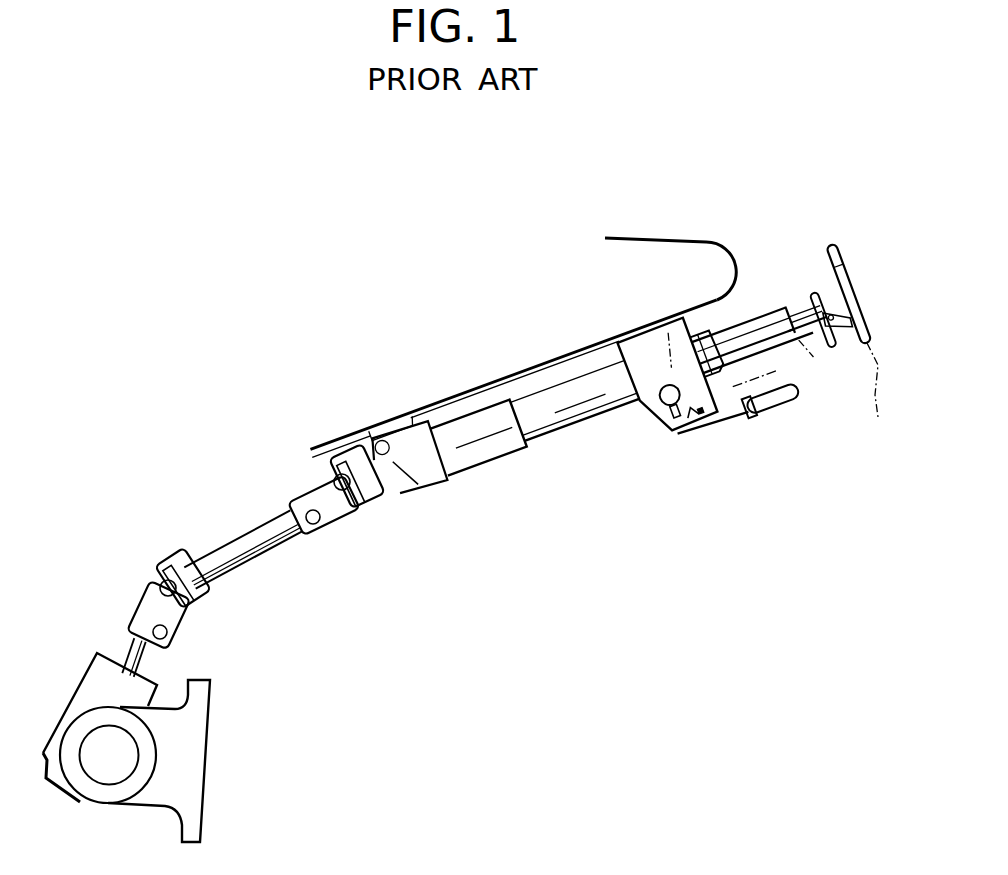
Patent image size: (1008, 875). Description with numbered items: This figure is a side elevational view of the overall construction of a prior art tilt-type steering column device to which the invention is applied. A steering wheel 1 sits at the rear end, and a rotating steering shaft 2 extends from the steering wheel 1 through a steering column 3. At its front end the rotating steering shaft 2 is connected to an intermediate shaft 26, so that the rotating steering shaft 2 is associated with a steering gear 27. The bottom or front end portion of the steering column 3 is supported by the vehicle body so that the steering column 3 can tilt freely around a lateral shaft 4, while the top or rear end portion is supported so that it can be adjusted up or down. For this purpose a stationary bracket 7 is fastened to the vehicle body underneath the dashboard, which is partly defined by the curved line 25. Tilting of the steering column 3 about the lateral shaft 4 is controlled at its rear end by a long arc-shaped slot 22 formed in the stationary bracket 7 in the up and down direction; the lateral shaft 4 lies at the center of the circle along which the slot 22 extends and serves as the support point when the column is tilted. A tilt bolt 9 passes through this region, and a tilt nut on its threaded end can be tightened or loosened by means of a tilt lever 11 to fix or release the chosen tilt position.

The steering wheel 1 is at (838, 250).
The rotating steering shaft 2 is at (797, 303).
The steering column 3 is at (562, 418).
The lateral shaft 4 is at (374, 447).
The stationary bracket 7 is at (637, 347).
The tilt bolt 9 is at (660, 398).
The tilt lever 11 is at (783, 399).
The slot 22 is at (665, 420).
The curved line 25 is at (653, 238).
The intermediate shaft 26 is at (256, 553).
The steering gear 27 is at (147, 760).